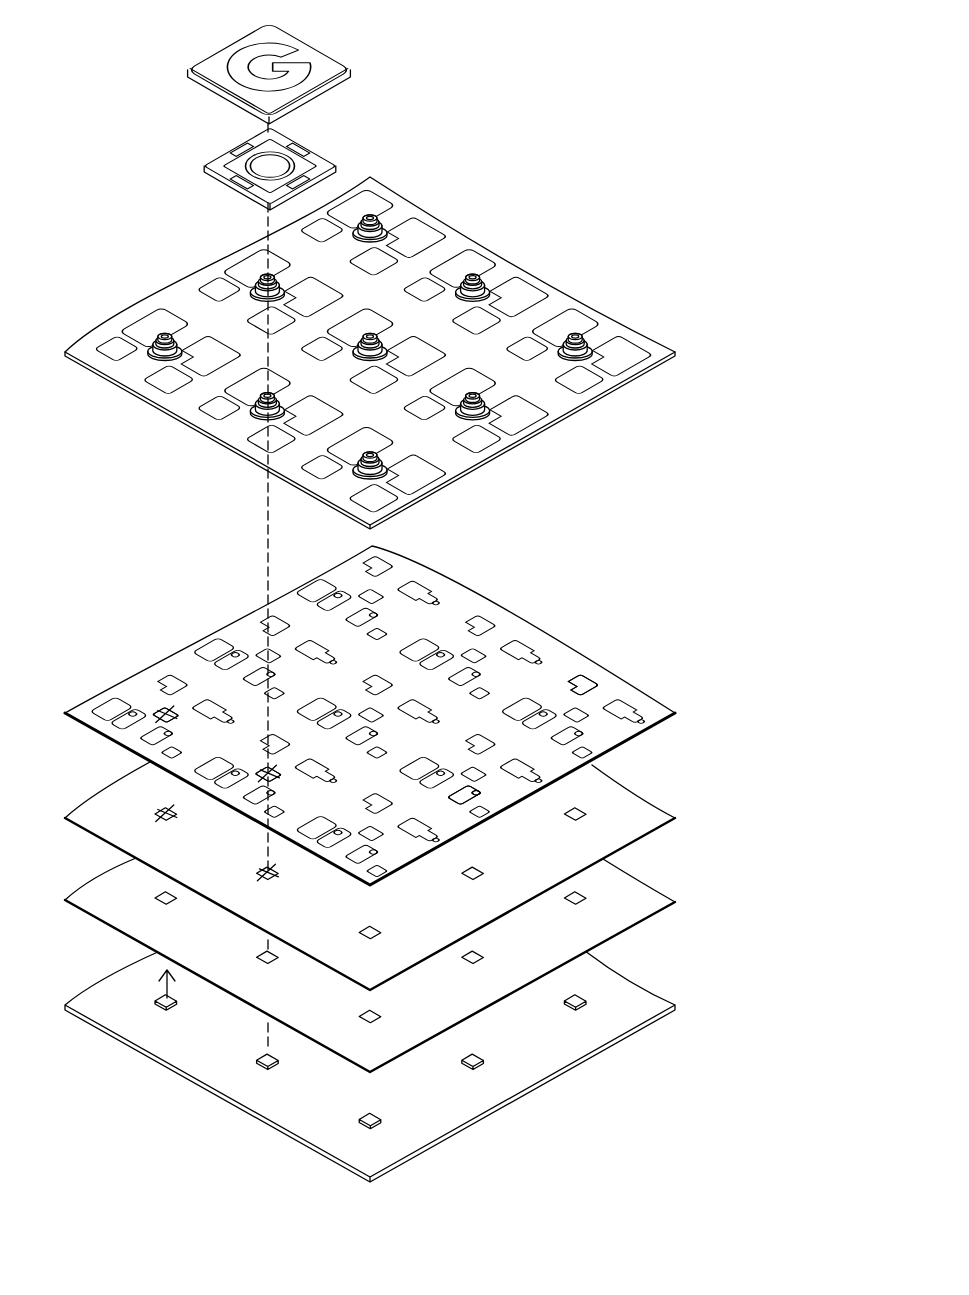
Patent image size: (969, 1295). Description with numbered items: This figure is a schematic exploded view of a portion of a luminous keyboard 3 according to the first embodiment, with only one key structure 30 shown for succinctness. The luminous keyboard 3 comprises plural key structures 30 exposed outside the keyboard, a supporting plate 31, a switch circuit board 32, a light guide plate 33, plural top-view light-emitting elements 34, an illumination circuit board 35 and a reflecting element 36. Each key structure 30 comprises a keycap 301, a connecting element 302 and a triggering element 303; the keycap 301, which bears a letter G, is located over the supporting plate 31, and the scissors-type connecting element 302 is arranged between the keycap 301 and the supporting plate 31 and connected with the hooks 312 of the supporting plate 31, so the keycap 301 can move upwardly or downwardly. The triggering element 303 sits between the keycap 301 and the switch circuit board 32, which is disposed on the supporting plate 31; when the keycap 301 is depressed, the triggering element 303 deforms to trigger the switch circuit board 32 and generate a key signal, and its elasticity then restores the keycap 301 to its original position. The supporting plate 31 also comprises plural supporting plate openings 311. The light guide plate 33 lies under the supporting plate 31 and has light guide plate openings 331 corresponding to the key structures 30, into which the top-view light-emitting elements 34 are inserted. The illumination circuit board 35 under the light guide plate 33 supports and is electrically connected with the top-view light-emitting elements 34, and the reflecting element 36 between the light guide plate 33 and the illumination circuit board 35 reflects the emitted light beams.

The luminous keyboard 3 is at (478, 87).
The key structure 30 is at (365, 242).
The keycap 301 is at (287, 43).
The connecting element 302 is at (226, 150).
The triggering element 303 is at (162, 335).
The supporting plate 31 is at (522, 620).
The supporting plate opening 311 is at (166, 706).
The hook 312 is at (569, 677).
The switch circuit board 32 is at (572, 289).
The light guide plate 33 is at (613, 800).
The light guide plate opening 331 is at (168, 810).
The top-view light-emitting element 34 is at (155, 1000).
The illumination circuit board 35 is at (613, 990).
The reflecting element 36 is at (628, 893).